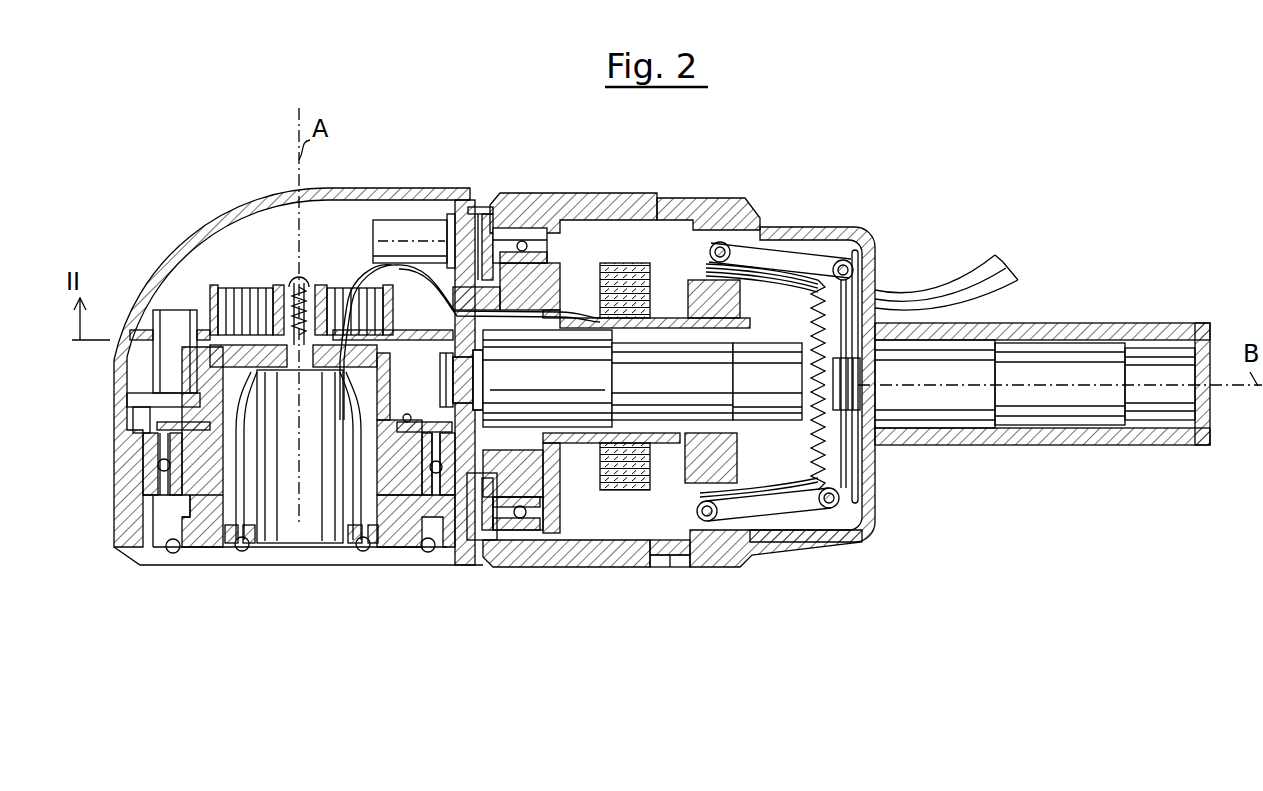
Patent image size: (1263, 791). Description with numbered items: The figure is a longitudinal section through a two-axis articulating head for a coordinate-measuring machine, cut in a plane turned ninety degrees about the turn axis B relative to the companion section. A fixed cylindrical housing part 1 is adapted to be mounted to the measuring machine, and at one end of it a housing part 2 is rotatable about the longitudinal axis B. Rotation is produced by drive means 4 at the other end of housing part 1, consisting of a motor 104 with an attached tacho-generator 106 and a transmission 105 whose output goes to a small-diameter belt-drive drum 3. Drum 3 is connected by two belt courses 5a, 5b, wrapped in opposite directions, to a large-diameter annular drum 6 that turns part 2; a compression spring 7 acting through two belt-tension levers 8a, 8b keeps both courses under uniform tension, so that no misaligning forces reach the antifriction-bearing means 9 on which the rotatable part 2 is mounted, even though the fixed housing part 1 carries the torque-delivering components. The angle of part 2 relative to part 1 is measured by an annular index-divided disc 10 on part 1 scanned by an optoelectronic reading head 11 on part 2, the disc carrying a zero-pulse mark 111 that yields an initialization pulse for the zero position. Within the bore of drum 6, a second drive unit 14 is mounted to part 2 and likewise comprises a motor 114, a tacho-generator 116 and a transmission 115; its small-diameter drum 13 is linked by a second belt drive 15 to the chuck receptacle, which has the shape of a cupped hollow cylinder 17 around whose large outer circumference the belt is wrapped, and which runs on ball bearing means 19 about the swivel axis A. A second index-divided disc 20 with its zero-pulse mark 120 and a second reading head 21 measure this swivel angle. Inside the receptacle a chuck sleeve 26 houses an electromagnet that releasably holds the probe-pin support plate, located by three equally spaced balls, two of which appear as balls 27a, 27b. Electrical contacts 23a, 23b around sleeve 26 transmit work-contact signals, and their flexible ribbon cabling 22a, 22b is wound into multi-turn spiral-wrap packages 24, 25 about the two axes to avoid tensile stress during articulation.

The cylindrical housing part 1 is at (586, 200).
The housing part 2 is at (225, 205).
The belt-drive drum 3 is at (875, 472).
The drive means 4 is at (1086, 320).
The belt course 5a is at (797, 250).
The belt course 5b is at (868, 503).
The annular drum 6 is at (736, 310).
The compression spring 7 is at (832, 506).
The belt-tension lever 8a is at (770, 244).
The belt-tension lever 8b is at (748, 522).
The antifriction-bearing means 9 is at (525, 568).
The annular index-divided disc 10 is at (493, 542).
The optoelectronic reading head 11 is at (378, 238).
The small-diameter drum 13 is at (484, 374).
The second drive unit 14 is at (572, 378).
The second belt drive 15 is at (408, 360).
The cupped hollow cylinder 17 is at (215, 548).
The ball bearing means 19 is at (150, 458).
The second annular index-divided disc 20 is at (135, 418).
The second optoelectronic reading head 21 is at (178, 312).
The flexible multiple-conductor ribbon cabling 22a is at (318, 548).
The flexible multiple-conductor ribbon cabling 22b is at (333, 548).
The electrical contact 23a is at (243, 551).
The electrical contact 23b is at (363, 551).
The spiral-wrap package 24 is at (238, 292).
The spiral-wrap package 25 is at (612, 266).
The chuck sleeve 26 is at (313, 546).
The locating ball 27a is at (173, 554).
The locating ball 27b is at (430, 553).
The motor 104 is at (1055, 426).
The transmission 105 is at (935, 429).
The tacho-generator 106 is at (1160, 421).
The zero-pulse mark 111 is at (462, 208).
The motor 114 is at (668, 421).
The transmission 115 is at (580, 428).
The tacho-generator 116 is at (765, 421).
The zero-pulse mark 120 is at (436, 475).